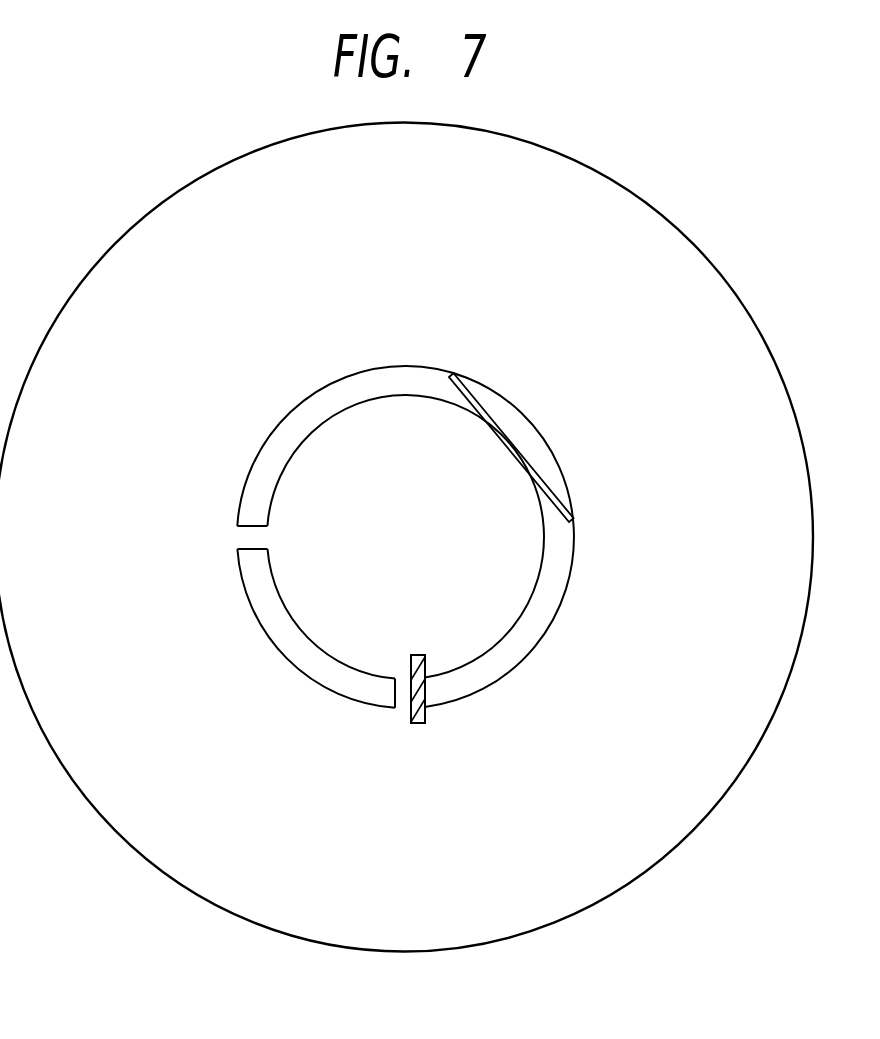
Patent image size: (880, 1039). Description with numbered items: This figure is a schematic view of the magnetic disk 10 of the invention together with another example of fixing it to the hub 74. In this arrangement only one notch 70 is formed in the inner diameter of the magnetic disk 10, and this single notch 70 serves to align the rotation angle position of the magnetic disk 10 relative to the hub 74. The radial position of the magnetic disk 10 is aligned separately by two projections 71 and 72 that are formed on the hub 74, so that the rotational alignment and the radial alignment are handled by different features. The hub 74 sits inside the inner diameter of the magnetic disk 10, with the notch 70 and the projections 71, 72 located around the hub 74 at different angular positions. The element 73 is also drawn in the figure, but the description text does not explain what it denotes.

The magnetic disk 10 is at (763, 343).
The notch 70 is at (425, 714).
The projection 71 is at (402, 685).
The projection 72 is at (263, 537).
The spring strip 73 is at (510, 432).
The hub 74 is at (518, 598).